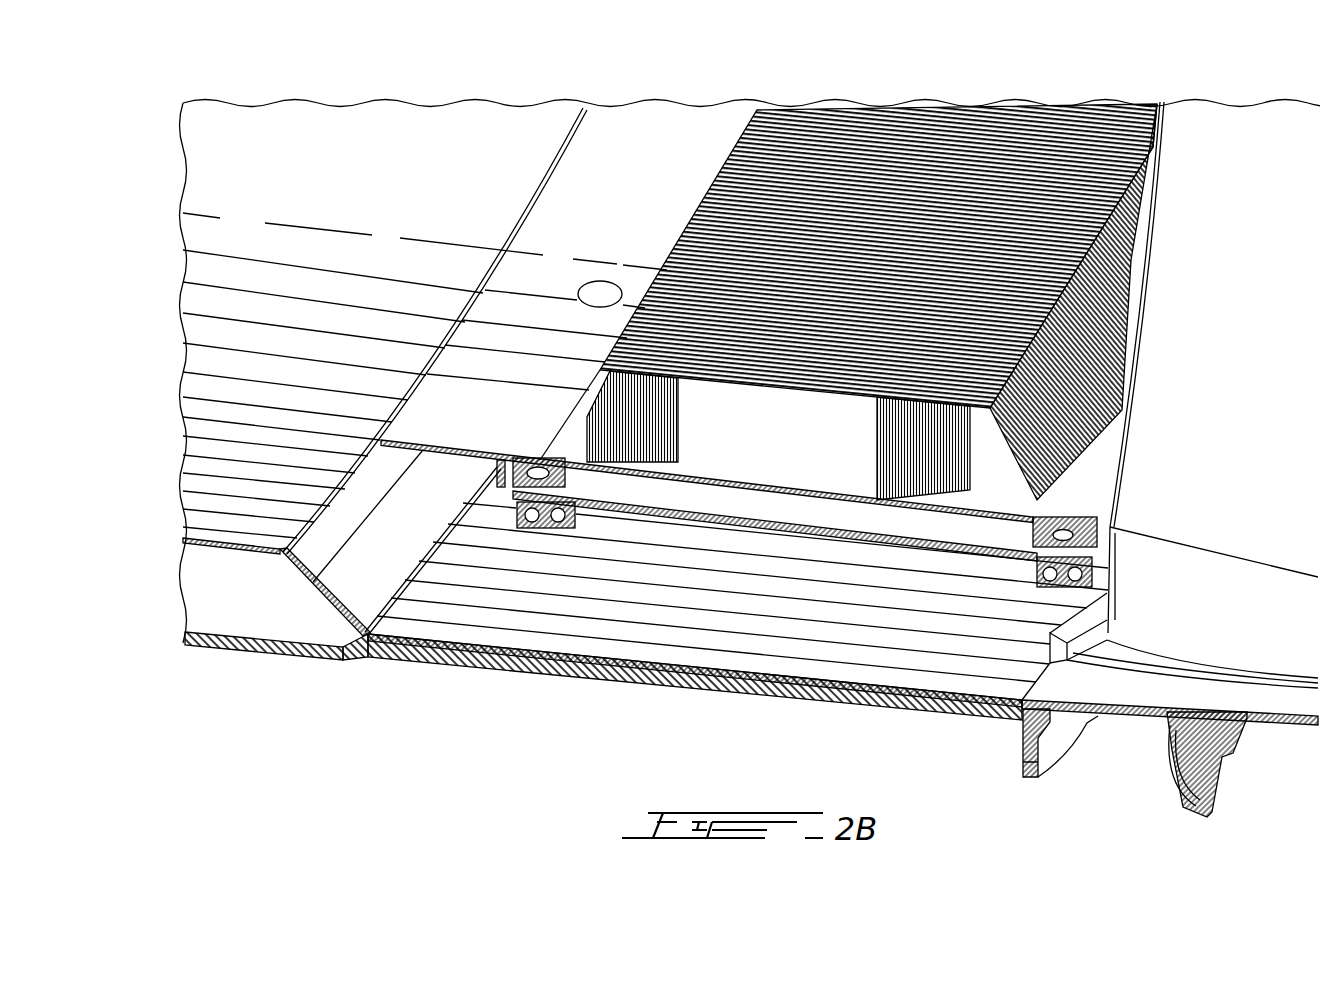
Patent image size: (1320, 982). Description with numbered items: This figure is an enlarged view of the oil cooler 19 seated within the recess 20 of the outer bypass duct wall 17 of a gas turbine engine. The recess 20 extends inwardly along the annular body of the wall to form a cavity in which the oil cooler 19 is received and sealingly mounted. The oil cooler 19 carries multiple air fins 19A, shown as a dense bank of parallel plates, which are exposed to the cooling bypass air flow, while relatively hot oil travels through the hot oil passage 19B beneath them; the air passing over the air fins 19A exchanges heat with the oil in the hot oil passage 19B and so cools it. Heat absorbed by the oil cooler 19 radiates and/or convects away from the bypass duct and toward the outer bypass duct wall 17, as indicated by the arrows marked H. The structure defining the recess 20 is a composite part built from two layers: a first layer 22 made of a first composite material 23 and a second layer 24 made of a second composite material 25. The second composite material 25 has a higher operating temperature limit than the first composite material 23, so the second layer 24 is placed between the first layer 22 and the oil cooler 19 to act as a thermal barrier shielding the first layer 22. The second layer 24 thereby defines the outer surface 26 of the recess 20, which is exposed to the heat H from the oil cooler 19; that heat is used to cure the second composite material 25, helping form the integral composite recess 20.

The outer bypass duct wall 17 is at (223, 545).
The oil cooler 19 is at (805, 190).
The air fins 19A is at (1110, 272).
The hot oil passage 19B is at (937, 547).
The recess 20 is at (440, 625).
The first layer 22 is at (297, 565).
The first composite material 23 is at (233, 410).
The second layer 24 is at (522, 652).
The second composite material 25 is at (690, 630).
The outer surface 26 is at (960, 658).
The heat H is at (869, 618).